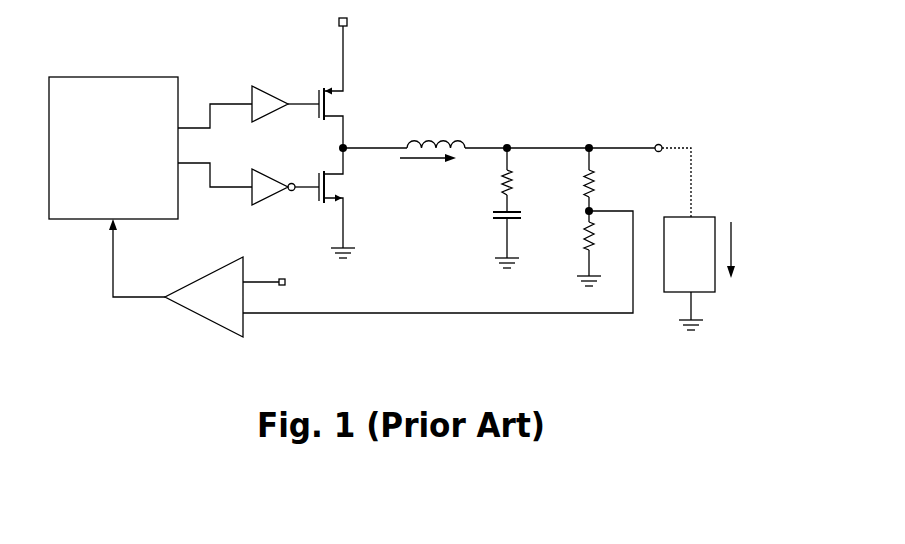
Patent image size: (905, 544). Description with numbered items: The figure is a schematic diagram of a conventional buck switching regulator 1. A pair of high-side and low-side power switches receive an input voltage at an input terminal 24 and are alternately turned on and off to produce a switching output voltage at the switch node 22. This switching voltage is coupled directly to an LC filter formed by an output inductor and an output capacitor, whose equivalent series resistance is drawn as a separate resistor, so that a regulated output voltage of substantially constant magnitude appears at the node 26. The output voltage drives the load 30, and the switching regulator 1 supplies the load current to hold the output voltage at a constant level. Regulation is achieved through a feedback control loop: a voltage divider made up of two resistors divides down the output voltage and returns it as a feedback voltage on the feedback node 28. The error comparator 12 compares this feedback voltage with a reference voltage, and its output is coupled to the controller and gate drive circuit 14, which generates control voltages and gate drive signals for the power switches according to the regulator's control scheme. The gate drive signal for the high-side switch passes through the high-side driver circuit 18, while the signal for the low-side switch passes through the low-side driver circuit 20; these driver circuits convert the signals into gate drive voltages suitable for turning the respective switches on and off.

The switching regulator 1 is at (562, 52).
The error comparator 12 is at (208, 322).
The controller and gate drive circuit 14 is at (105, 202).
The high-side driver circuit 18 is at (271, 88).
The low-side driver circuit 20 is at (271, 172).
The switch node 22 is at (346, 146).
The input voltage terminal VIN 24 is at (347, 22).
The node 26 is at (507, 144).
The feedback node 28 is at (397, 313).
The load 30 is at (708, 217).